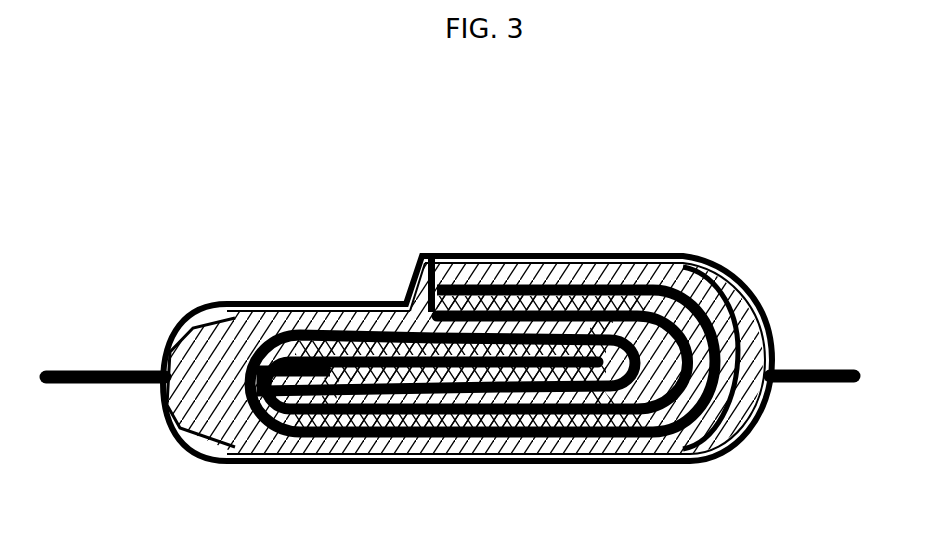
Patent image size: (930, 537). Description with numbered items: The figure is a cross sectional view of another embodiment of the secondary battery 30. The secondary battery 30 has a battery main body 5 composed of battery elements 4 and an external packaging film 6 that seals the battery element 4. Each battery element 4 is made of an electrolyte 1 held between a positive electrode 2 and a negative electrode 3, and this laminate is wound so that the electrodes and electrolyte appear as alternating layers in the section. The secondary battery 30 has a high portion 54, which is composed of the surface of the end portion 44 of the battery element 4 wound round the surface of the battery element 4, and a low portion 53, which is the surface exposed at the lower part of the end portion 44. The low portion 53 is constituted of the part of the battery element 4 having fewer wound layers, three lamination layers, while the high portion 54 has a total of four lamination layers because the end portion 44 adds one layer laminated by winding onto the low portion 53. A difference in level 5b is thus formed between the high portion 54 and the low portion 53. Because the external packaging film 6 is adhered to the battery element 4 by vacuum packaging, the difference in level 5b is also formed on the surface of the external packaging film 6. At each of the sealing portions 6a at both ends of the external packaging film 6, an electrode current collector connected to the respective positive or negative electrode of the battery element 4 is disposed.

The electrolyte 1 is at (507, 283).
The positive electrode 2 is at (536, 280).
The negative electrode 3 is at (502, 197).
The battery element 4 is at (465, 302).
The battery main body 5 is at (465, 289).
The difference in level 5b is at (408, 300).
The external packaging film 6 is at (717, 265).
The sealing portion 6a is at (97, 370).
The secondary battery 30 is at (465, 289).
The end portion 44 is at (431, 256).
The low portion 53 is at (235, 302).
The high portion 54 is at (465, 255).